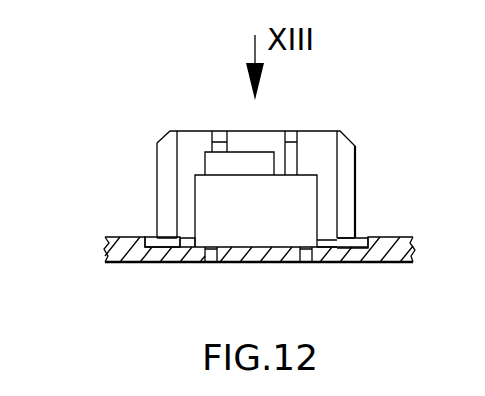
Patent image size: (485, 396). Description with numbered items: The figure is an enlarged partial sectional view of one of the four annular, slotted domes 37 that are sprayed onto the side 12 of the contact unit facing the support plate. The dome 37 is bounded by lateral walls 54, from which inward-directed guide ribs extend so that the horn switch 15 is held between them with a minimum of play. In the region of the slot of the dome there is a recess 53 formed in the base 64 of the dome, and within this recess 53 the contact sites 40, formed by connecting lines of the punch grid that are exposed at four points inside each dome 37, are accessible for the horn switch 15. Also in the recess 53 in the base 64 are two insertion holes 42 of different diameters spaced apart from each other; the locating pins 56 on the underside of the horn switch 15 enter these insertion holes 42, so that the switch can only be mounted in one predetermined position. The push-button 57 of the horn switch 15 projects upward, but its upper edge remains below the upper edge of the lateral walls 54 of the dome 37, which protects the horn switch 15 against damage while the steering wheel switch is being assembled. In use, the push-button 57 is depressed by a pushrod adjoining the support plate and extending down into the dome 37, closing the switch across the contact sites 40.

The side of contact unit 12 is at (392, 236).
The horn switch 15 is at (293, 199).
The dome 37 is at (142, 174).
The contact sites 40 is at (352, 222).
The insertion holes 42 is at (192, 262).
The recess 53 is at (143, 263).
The lateral walls 54 is at (318, 148).
The locating pins 56 is at (210, 263).
The push-button 57 is at (222, 160).
The base 64 is at (252, 263).